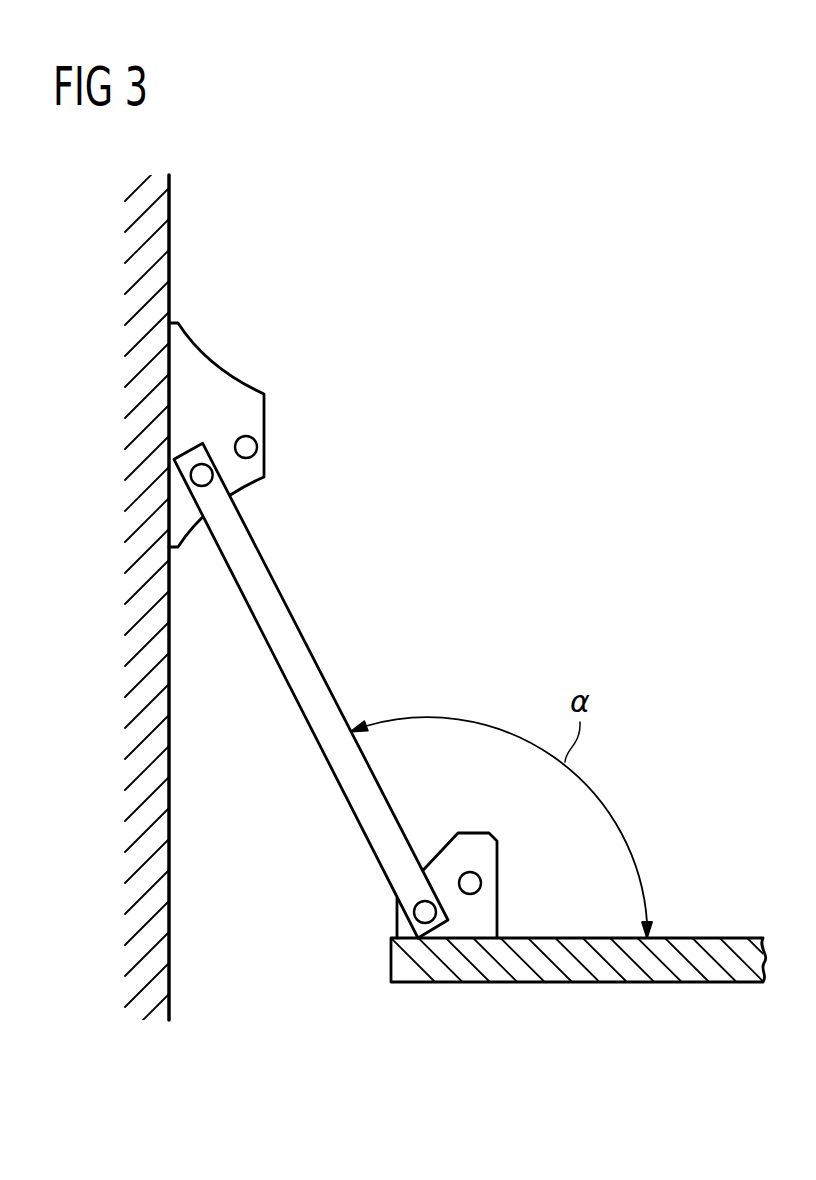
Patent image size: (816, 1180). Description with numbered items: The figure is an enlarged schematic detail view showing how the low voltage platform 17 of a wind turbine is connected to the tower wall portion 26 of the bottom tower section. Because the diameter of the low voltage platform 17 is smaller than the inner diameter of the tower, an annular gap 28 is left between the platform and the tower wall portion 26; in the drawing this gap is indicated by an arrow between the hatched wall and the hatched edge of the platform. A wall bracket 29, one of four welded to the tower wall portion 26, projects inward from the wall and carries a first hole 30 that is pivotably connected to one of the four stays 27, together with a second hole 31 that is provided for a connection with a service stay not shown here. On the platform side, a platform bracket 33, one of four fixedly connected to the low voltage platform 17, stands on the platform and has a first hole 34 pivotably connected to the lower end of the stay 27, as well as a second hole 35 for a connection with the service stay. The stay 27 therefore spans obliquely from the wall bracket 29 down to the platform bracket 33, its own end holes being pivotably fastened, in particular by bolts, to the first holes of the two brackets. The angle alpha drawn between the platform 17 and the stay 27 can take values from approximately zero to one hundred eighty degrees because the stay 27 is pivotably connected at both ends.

The low voltage platform 17 is at (598, 972).
The tower wall portion 26 is at (169, 230).
The stay 27 is at (295, 647).
The annular gap 28 is at (247, 962).
The wall bracket 29 is at (222, 373).
The first hole 30 is at (203, 475).
The second hole 31 is at (247, 447).
The platform bracket 33 is at (472, 845).
The first hole 34 is at (424, 912).
The second hole 35 is at (470, 883).